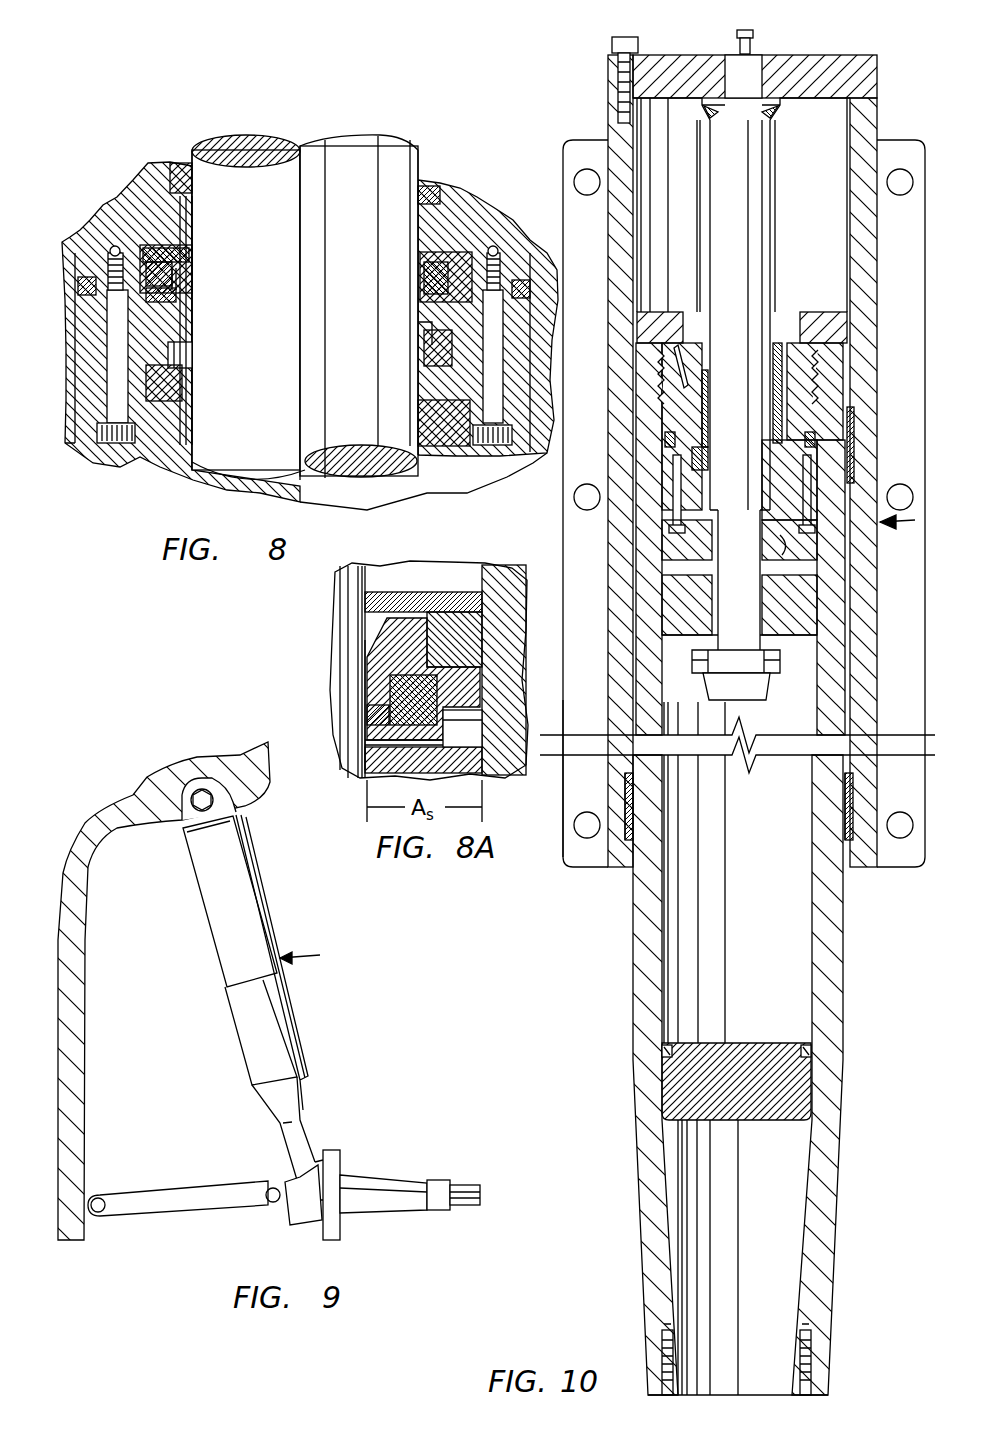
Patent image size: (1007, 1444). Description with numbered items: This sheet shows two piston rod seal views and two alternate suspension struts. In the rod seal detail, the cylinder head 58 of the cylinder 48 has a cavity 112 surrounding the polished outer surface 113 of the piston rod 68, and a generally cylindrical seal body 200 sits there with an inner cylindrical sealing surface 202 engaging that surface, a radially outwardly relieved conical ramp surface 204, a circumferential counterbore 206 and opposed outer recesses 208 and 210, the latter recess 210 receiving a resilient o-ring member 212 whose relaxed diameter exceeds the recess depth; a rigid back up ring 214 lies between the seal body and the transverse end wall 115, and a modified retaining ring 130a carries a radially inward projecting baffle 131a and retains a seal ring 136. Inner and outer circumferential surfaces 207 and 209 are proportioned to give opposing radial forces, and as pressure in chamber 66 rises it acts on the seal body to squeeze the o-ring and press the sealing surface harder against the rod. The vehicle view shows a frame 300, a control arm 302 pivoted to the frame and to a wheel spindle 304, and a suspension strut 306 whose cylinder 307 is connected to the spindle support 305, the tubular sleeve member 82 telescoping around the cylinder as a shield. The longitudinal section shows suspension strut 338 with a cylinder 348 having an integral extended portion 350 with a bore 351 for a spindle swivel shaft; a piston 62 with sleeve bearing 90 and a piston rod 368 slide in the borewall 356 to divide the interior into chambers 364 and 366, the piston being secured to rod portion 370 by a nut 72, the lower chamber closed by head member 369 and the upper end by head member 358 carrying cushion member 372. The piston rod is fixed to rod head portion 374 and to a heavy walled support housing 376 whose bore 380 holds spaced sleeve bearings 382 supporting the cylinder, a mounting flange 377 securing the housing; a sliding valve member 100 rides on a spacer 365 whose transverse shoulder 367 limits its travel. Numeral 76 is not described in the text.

In FIG. 8, the polished outer surface 113 is at (418, 150).
In FIG. 8A, the polished outer surface 113 is at (365, 580).
In FIG. 8, the cavity 112 is at (428, 280).
In FIG. 8, the inner cylindrical sealing surface 202 is at (420, 300).
In FIG. 8A, the inner cylindrical sealing surface 202 is at (362, 670).
In FIG. 8, the baffle 131a is at (420, 326).
In FIG. 8, the cylinder head 58 is at (515, 250).
In FIG. 8, the chamber 66 is at (450, 484).
In FIG. 8, the seal ring 136 is at (472, 445).
In FIG. 10, the seal ring 136 is at (684, 506).
In FIG. 8, the cylinder 48 is at (530, 455).
In FIG. 8, the back up ring 214 is at (150, 200).
In FIG. 8, the o-ring member 212 is at (150, 262).
In FIG. 8A, the o-ring member 212 is at (380, 628).
In FIG. 8, the end wall 115 is at (195, 248).
In FIG. 8, the conical ramp surface 204 is at (190, 258).
In FIG. 8A, the conical ramp surface 204 is at (428, 635).
In FIG. 8, the seal body 200 is at (172, 276).
In FIG. 8A, the seal body 200 is at (360, 695).
In FIG. 8, the inner circumferential surface 207 is at (176, 288).
In FIG. 8A, the inner circumferential surface 207 is at (375, 740).
In FIG. 8, the counterbore 206 is at (176, 300).
In FIG. 8A, the counterbore 206 is at (375, 715).
In FIG. 8, the outer circumferential surface 209 is at (180, 335).
In FIG. 8A, the outer circumferential surface 209 is at (470, 740).
In FIG. 8, the outer recess 208 is at (160, 386).
In FIG. 8A, the outer recess 208 is at (460, 722).
In FIG. 8, the recess 210 is at (148, 455).
In FIG. 8A, the recess 210 is at (478, 650).
In FIG. 8, the retaining ring 130a is at (168, 447).
In FIG. 8, the piston rod 68 is at (300, 480).
In FIG. 8A, the piston rod 68 is at (345, 585).
In FIG. 9, the bracket 76 is at (190, 760).
In FIG. 9, the frame 300 is at (270, 800).
In FIG. 9, the sleeve member 82 is at (252, 908).
In FIG. 9, the suspension strut 306 is at (300, 957).
In FIG. 9, the cylinder 307 is at (290, 1035).
In FIG. 9, the spindle support 305 is at (302, 1165).
In FIG. 9, the wheel spindle 304 is at (400, 1175).
In FIG. 9, the control arm 302 is at (206, 1193).
In FIG. 10, the sleeve bearings 382 is at (755, 36).
In FIG. 10, the rod head portion 374 is at (872, 70).
In FIG. 10, the support housing 376 is at (868, 165).
In FIG. 10, the bore 380 is at (840, 205).
In FIG. 10, the piston rod 368 is at (762, 247).
In FIG. 10, the cushion member 372 is at (830, 320).
In FIG. 10, the head member 358 is at (808, 380).
In FIG. 10, the suspension strut 338 is at (915, 520).
In FIG. 10, the transverse shoulder 367 is at (800, 540).
In FIG. 10, the valve member 100 is at (690, 551).
In FIG. 10, the chamber 366 is at (800, 562).
In FIG. 10, the spacer 365 is at (695, 548).
In FIG. 10, the sleeve bearing 90 is at (672, 615).
In FIG. 10, the rod portion 370 is at (742, 624).
In FIG. 10, the piston 62 is at (860, 650).
In FIG. 10, the nut 72 is at (752, 700).
In FIG. 10, the borewall 356 is at (845, 779).
In FIG. 10, the chamber 364 is at (770, 826).
In FIG. 10, the mounting flange 377 is at (571, 867).
In FIG. 10, the cylinder 348 is at (839, 949).
In FIG. 10, the head member 369 is at (785, 1076).
In FIG. 10, the extended portion 350 is at (827, 1210).
In FIG. 10, the bore 351 is at (683, 1220).